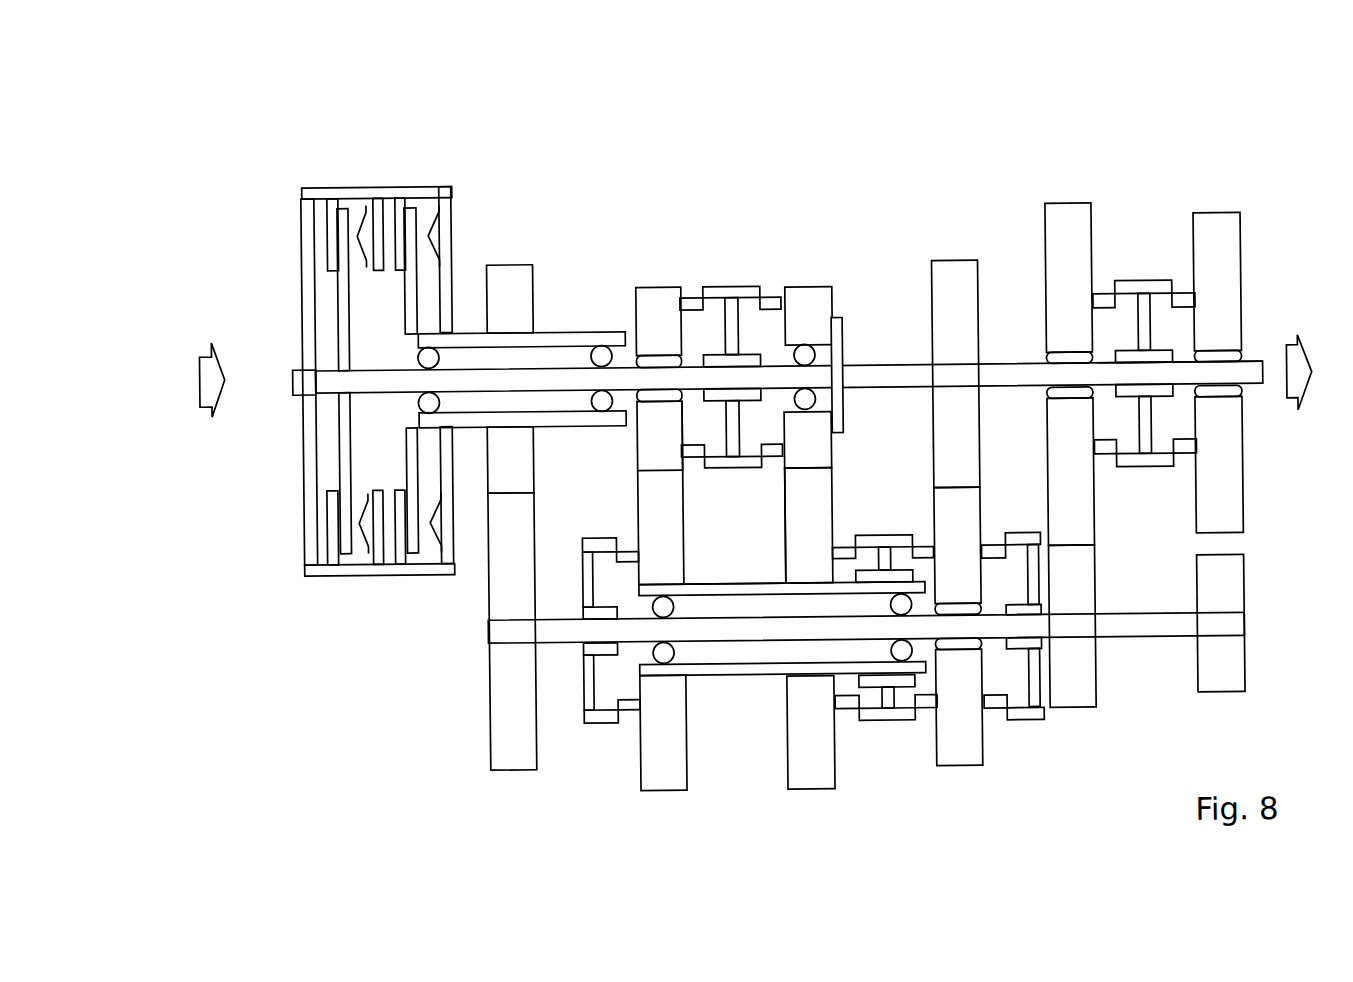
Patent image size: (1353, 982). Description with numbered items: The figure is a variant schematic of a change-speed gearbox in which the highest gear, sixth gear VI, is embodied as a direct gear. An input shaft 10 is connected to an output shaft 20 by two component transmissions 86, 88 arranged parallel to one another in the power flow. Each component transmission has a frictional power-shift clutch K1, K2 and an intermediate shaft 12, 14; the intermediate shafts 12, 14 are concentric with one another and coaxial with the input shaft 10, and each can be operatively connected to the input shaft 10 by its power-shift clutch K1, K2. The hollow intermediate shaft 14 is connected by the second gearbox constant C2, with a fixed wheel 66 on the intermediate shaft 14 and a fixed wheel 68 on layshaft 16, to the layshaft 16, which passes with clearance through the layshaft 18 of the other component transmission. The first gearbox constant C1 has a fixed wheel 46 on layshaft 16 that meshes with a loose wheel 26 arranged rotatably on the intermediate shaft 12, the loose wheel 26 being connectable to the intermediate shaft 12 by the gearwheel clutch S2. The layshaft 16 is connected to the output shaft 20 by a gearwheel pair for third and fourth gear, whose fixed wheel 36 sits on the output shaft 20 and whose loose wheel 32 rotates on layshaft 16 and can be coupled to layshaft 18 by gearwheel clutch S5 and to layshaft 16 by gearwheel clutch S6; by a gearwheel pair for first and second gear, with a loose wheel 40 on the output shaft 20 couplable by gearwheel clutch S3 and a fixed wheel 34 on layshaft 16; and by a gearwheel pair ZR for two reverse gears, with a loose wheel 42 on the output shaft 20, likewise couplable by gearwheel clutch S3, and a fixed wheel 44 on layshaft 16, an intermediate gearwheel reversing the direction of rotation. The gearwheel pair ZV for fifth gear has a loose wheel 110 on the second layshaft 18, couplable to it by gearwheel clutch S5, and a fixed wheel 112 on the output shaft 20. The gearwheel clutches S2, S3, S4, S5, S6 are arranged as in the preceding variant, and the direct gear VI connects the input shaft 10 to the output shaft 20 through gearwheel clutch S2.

The input shaft 10 is at (309, 374).
The intermediate shaft 12 is at (352, 376).
The intermediate shaft 14 is at (442, 330).
The layshaft 16 is at (568, 631).
The layshaft 18 is at (665, 676).
The output shaft 20 is at (1244, 379).
The loose wheel 26 is at (685, 480).
The loose wheel 32 is at (957, 528).
The fixed wheel 34 is at (1082, 582).
The fixed wheel 36 is at (939, 296).
The loose wheel 40 is at (1069, 297).
The loose wheel 42 is at (1220, 250).
The fixed wheel 44 is at (1221, 595).
The fixed wheel 46 is at (665, 744).
The fixed wheel 66 is at (522, 468).
The fixed wheel 68 is at (509, 743).
The component transmission 86 is at (763, 849).
The component transmission 88 is at (1083, 847).
The loose wheel 110 is at (808, 504).
The fixed wheel 112 is at (808, 458).
The power-shift clutch K1 is at (349, 563).
The power-shift clutch K2 is at (417, 563).
The first gearbox constant C1 is at (660, 272).
The second gearbox constant C2 is at (513, 250).
The gearwheel clutch S2 is at (739, 288).
The gearwheel clutch S3 is at (1152, 285).
The gearwheel clutch S4 is at (606, 722).
The gearwheel clutch S5 is at (878, 722).
The gearwheel clutch S6 is at (1016, 724).
The gearwheel pair ZV is at (820, 271).
The gearwheel pair ZR is at (1220, 206).
The sixth gear VI is at (850, 339).